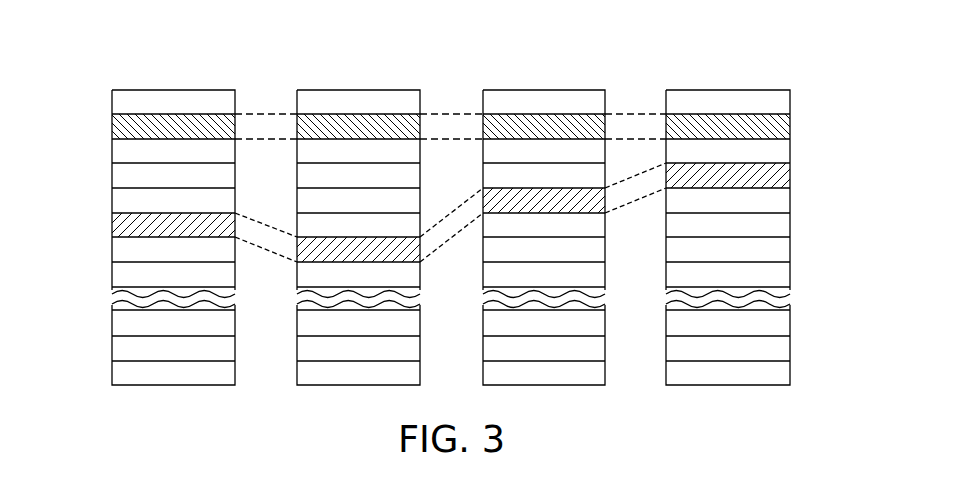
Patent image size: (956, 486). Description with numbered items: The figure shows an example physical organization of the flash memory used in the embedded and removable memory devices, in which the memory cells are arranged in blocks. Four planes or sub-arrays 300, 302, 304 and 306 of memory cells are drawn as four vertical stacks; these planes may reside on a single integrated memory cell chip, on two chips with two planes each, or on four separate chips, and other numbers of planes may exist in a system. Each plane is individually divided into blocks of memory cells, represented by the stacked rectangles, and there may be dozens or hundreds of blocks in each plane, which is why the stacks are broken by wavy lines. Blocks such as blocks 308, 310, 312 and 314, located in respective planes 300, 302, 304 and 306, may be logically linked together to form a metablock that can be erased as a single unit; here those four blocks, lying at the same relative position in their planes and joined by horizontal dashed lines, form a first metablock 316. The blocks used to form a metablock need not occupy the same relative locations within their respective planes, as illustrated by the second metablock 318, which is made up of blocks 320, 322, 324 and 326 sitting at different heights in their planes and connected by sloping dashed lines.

The plane 300 is at (172, 82).
The plane 302 is at (360, 80).
The plane 304 is at (541, 79).
The plane 306 is at (764, 85).
The block 308 is at (148, 128).
The block 310 is at (340, 128).
The block 312 is at (525, 125).
The block 314 is at (757, 128).
The first metablock 316 is at (634, 108).
The second metablock 318 is at (640, 165).
The block 320 is at (150, 224).
The block 322 is at (335, 247).
The block 324 is at (530, 198).
The block 326 is at (757, 172).